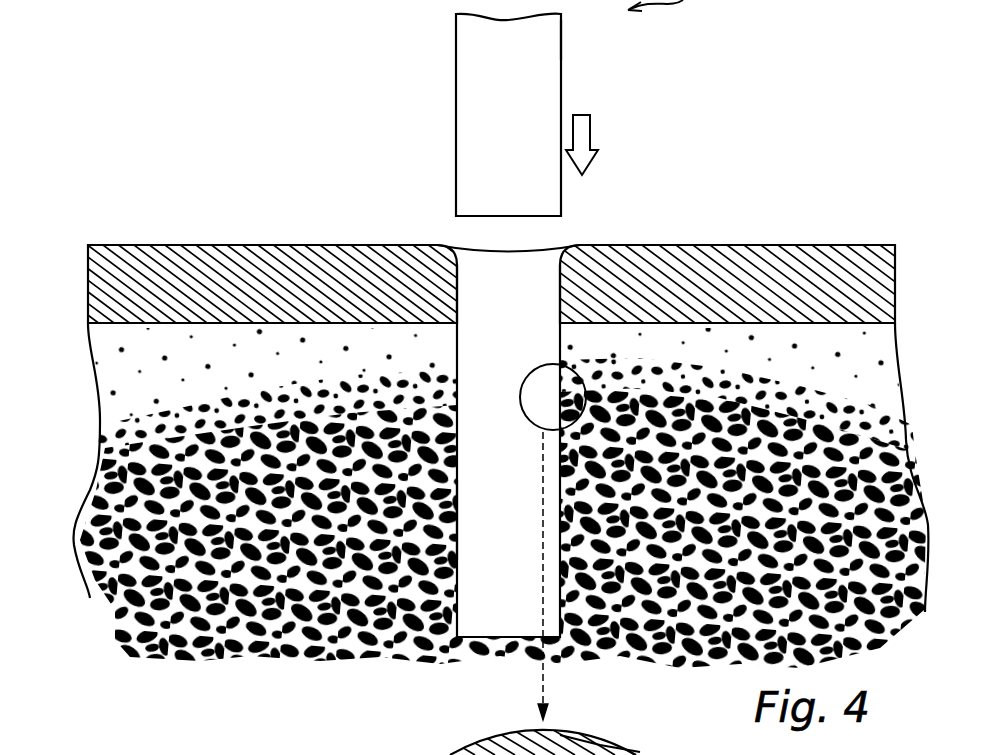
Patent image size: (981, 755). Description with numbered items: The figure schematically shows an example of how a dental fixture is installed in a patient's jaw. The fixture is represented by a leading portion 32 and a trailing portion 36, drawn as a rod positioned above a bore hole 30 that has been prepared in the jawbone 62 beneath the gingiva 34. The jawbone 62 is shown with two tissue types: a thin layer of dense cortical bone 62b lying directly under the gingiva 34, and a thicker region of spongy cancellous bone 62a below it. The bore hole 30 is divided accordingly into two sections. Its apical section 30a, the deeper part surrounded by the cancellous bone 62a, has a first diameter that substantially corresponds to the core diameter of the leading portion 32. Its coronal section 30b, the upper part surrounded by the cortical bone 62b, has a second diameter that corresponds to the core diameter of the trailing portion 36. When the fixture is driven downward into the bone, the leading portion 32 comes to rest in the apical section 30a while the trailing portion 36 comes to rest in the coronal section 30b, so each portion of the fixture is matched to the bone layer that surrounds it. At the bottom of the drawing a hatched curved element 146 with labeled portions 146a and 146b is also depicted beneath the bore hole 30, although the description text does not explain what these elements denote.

The bore hole 30 is at (531, 300).
The apical section 30a is at (532, 505).
The coronal section 30b is at (530, 377).
The leading portion 32 is at (475, 150).
The gingiva 34 is at (200, 262).
The trailing portion 36 is at (553, 37).
The jawbone 62 is at (471, 465).
The cancellous bone 62a is at (314, 655).
The cortical bone 62b is at (283, 360).
The substrate 146 is at (460, 754).
The substrate surface portion 146a is at (640, 752).
The substrate curved portion 146b is at (578, 750).